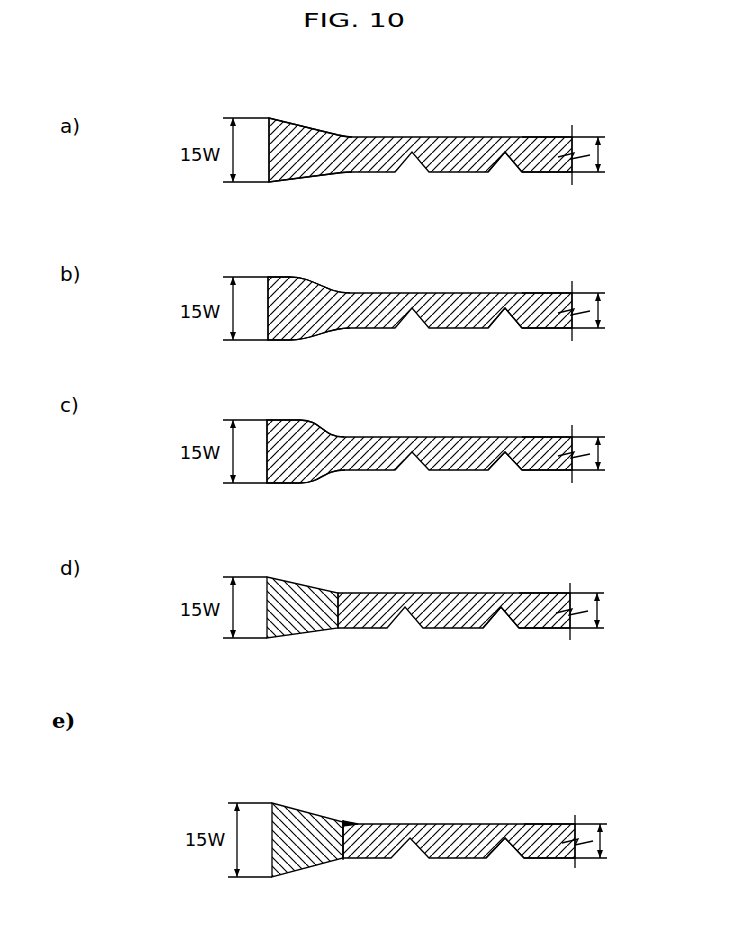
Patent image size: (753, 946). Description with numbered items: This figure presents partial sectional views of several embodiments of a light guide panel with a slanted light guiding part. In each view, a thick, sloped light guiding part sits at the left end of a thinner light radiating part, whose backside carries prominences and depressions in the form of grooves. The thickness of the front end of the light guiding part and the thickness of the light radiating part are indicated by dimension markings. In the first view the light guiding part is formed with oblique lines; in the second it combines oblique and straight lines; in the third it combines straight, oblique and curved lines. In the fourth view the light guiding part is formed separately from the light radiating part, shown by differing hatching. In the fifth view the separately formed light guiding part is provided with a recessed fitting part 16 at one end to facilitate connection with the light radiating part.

The recessed fitting part 16 is at (343, 860).